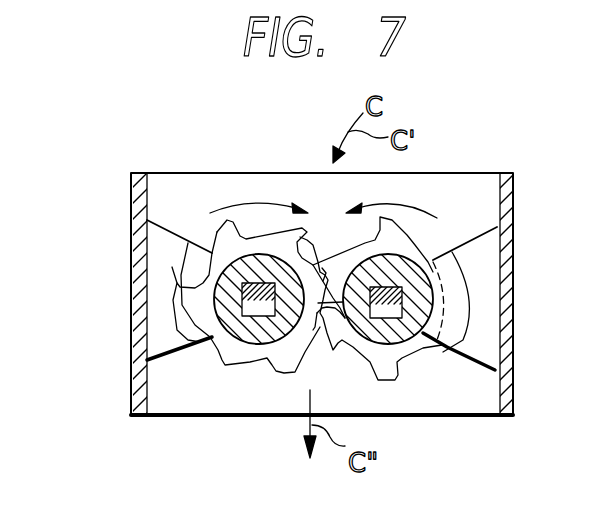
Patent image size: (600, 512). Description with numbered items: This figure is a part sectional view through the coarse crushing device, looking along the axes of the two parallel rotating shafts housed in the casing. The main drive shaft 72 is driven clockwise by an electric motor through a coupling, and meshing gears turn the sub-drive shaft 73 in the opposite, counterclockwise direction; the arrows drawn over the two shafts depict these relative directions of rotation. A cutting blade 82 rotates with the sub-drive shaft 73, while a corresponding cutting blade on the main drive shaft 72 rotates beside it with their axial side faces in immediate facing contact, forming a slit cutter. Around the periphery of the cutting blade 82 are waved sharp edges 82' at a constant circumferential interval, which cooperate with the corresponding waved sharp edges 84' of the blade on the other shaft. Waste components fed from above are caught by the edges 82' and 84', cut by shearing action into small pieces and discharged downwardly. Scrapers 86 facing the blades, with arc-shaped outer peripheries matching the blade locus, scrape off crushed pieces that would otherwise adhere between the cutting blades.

The main drive shaft 72 is at (399, 292).
The sub-drive shaft 73 is at (270, 292).
The cutting blade 82 is at (259, 349).
The waved sharp edge 82' is at (132, 342).
The waved sharp edge 84' is at (388, 253).
The scraper 86 is at (286, 300).